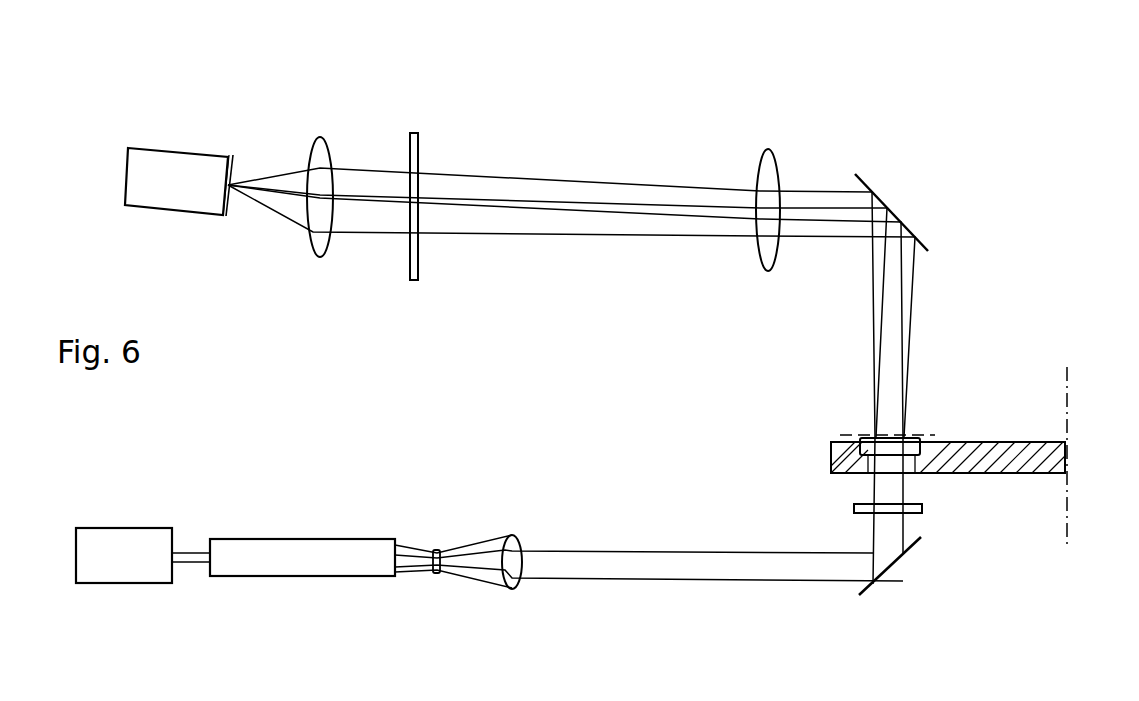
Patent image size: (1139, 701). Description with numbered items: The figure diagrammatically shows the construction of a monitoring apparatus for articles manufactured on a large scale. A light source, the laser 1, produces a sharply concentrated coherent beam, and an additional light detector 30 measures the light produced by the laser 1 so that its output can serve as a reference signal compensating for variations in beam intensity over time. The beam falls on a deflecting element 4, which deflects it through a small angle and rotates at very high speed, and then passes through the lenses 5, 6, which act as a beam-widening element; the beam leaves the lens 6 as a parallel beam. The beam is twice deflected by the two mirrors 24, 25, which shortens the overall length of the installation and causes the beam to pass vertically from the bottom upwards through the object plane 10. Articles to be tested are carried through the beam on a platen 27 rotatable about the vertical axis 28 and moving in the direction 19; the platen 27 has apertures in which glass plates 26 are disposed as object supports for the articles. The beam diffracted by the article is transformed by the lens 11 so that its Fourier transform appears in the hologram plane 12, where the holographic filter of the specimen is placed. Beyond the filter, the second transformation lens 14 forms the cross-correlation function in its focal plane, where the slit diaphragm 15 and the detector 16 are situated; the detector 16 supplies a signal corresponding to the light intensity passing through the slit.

The laser 1 is at (283, 539).
The deflecting element 4 is at (923, 509).
The lens 5 is at (438, 550).
The lens 6 is at (515, 535).
The object plane 10 is at (923, 437).
The lens 11 is at (769, 150).
The hologram plane 12 is at (418, 133).
The second transformation lens 14 is at (326, 138).
The diaphragm 15 is at (232, 170).
The detector 16 is at (167, 163).
The direction 19 is at (870, 462).
The mirror 24 is at (870, 590).
The mirror 25 is at (863, 180).
The glass plate 26 is at (910, 437).
The platen 27 is at (1010, 475).
The vertical axis 28 is at (1068, 370).
The light detector 30 is at (122, 528).